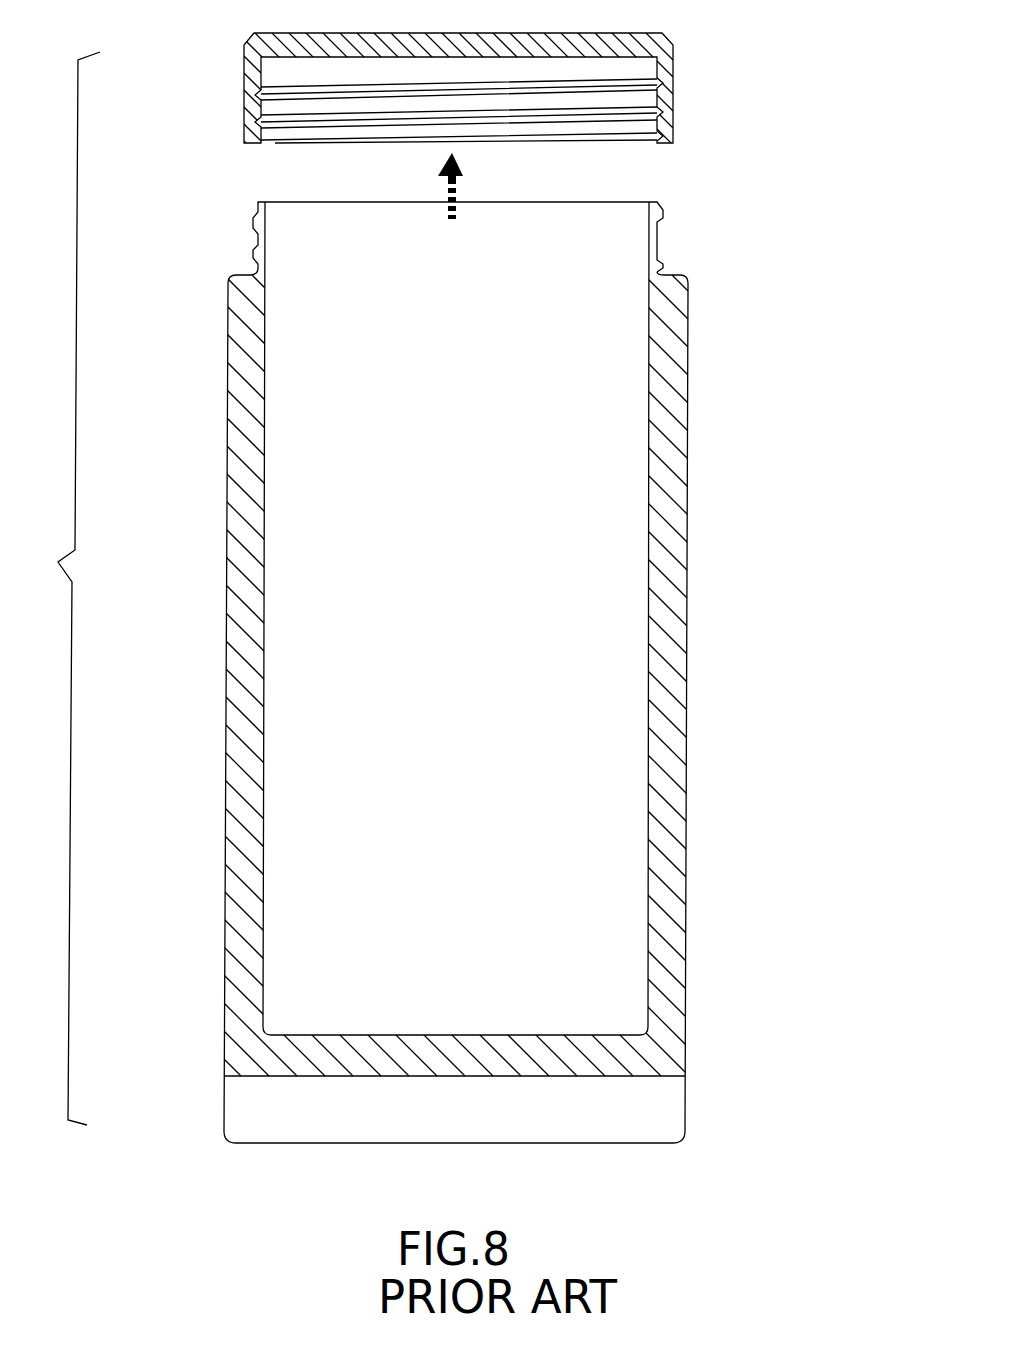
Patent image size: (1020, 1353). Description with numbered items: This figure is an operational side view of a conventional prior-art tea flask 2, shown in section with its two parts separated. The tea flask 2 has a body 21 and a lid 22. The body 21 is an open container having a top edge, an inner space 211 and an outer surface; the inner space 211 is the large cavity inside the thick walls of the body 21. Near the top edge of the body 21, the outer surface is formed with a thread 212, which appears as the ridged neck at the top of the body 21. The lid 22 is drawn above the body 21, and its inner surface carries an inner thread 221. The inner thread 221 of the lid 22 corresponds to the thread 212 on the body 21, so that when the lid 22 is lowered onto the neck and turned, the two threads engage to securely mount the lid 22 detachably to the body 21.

The tea flask 2 is at (698, 59).
The body 21 is at (693, 705).
The inner space 211 is at (626, 520).
The thread 212 is at (661, 238).
The lid 22 is at (668, 110).
The inner thread 221 is at (657, 85).